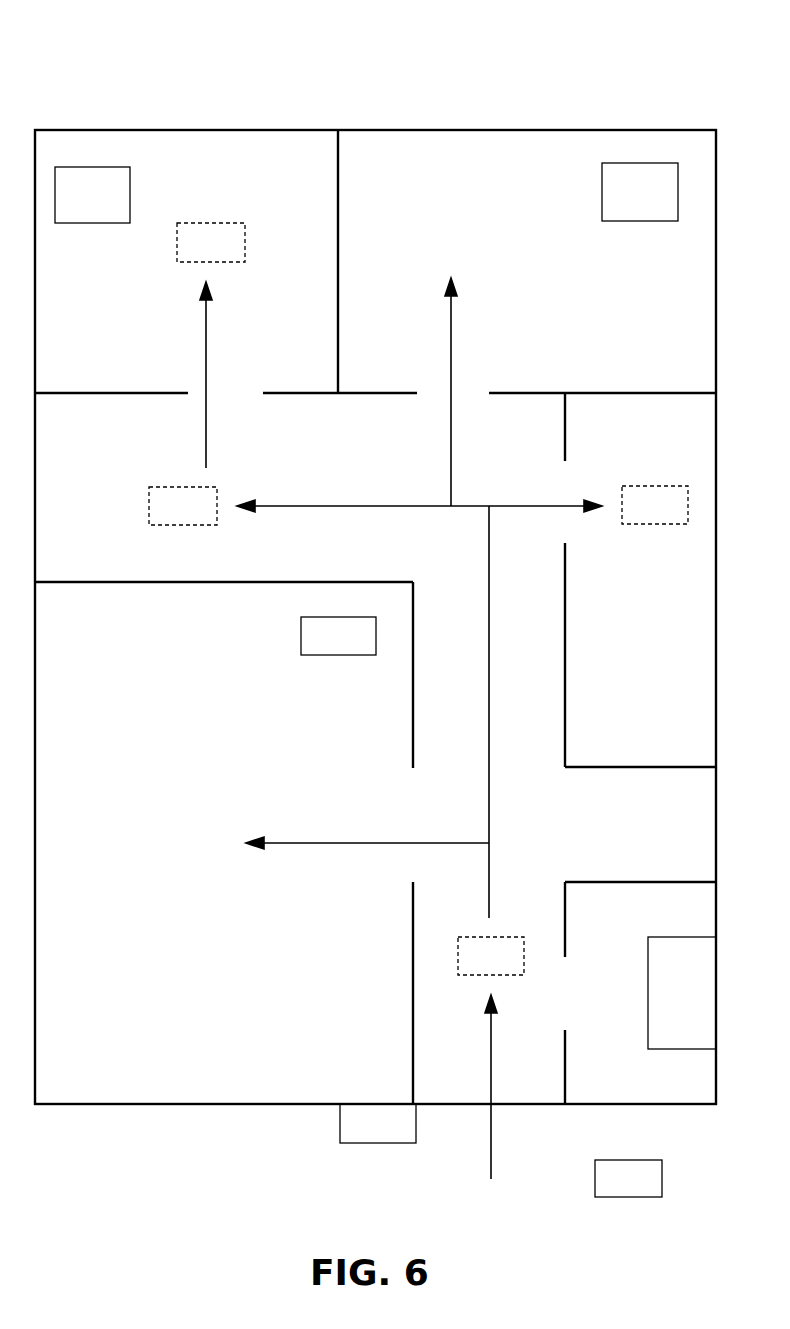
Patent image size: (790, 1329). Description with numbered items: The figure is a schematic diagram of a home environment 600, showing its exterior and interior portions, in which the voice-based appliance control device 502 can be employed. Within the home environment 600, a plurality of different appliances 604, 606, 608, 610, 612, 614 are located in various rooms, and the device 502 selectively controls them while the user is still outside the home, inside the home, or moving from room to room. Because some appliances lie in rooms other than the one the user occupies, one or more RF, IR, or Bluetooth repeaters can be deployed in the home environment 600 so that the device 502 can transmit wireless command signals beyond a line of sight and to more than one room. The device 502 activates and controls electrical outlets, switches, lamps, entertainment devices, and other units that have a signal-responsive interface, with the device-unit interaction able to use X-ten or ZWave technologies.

The home environment 600 is at (711, 23).
The appliance 610 is at (92, 195).
The appliance 612 is at (640, 192).
The appliance 606 is at (224, 843).
The appliance 604 is at (682, 993).
The appliance 614 is at (378, 1123).
The appliance 608 is at (183, 506).
The voice-based appliance control device 502 is at (432, 710).